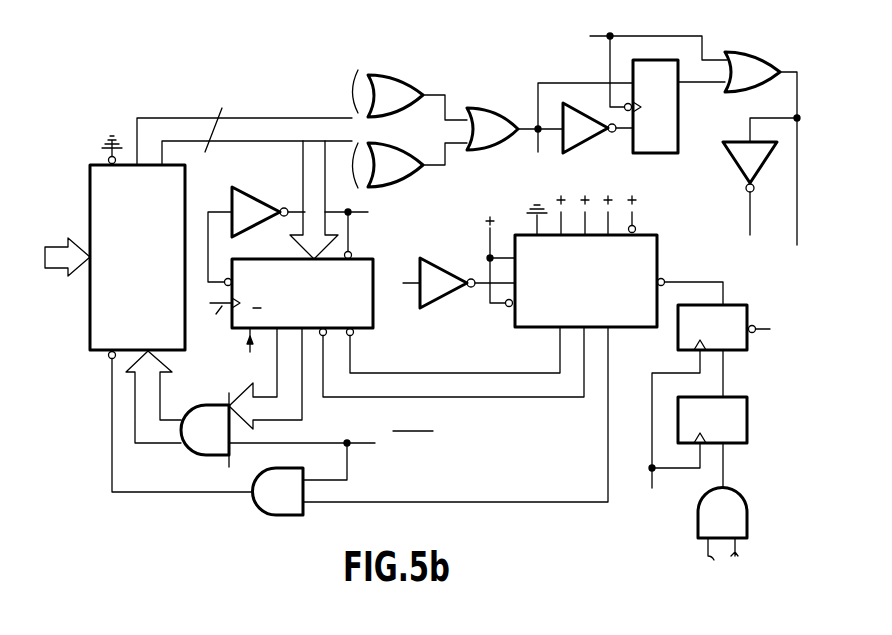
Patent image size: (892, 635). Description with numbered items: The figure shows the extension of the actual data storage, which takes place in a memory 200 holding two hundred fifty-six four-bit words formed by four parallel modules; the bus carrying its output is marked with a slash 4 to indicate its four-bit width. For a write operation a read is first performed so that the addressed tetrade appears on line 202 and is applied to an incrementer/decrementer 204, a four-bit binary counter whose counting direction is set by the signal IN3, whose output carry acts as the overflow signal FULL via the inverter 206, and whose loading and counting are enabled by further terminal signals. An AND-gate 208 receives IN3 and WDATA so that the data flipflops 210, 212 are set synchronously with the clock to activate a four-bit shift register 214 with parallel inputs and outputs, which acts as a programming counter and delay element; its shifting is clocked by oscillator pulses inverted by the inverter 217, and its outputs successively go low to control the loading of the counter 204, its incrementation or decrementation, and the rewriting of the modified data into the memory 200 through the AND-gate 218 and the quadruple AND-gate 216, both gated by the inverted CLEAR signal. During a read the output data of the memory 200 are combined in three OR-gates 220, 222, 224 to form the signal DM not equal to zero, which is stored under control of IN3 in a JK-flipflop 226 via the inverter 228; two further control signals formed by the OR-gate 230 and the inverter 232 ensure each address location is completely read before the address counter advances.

The bus width indicator (4 bits) 4 is at (219, 106).
The memory 200 is at (90, 200).
The line 202 is at (264, 118).
The incrementer/decrementer 204 is at (373, 310).
The inverter 206 is at (258, 198).
The AND-gate 208 is at (698, 520).
The data flipflop 210 is at (747, 425).
The data flipflop 212 is at (747, 341).
The shift register 214 is at (515, 318).
The quadruple AND-gate 216 is at (201, 404).
The inverter 217 is at (434, 262).
The AND-gate 218 is at (255, 506).
The OR-gate 220 is at (417, 86).
The OR-gate 222 is at (410, 180).
The OR-gate 224 is at (489, 107).
The JK-flipflop 226 is at (678, 97).
The inverter 228 is at (596, 115).
The OR-gate 230 is at (747, 42).
The inverter 232 is at (728, 168).